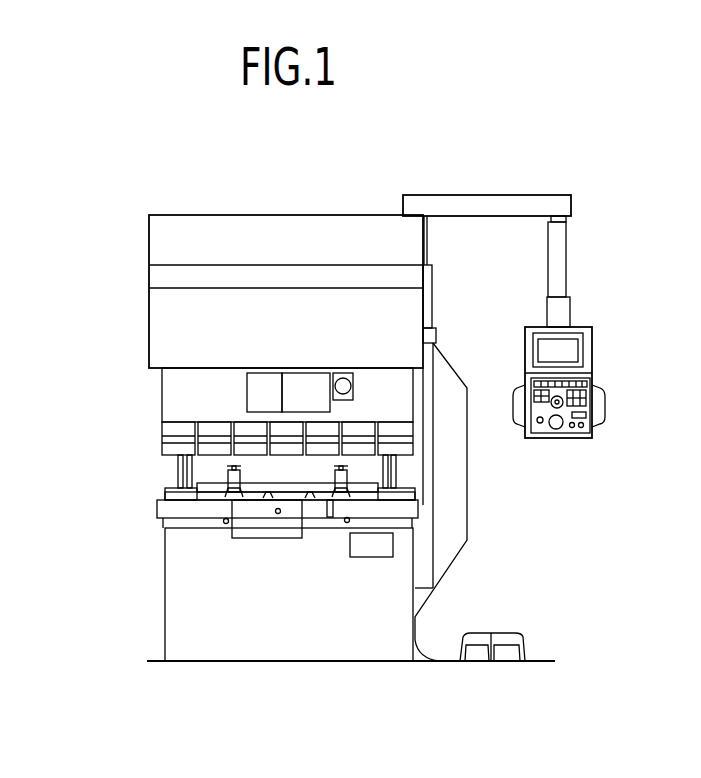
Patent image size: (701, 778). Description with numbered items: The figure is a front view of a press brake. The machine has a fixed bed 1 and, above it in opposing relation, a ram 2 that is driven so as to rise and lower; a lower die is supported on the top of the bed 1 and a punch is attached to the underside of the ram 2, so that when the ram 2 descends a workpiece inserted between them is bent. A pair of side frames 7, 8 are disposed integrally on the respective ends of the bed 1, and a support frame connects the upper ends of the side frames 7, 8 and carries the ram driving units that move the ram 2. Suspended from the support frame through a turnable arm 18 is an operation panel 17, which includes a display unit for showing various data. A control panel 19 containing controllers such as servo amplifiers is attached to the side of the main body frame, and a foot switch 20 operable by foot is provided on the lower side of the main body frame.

The bed 1 is at (173, 585).
The ram 2 is at (172, 403).
The side frame 7 is at (177, 478).
The side frame 8 is at (390, 473).
The operation panel 17 is at (589, 365).
The turnable arm 18 is at (495, 200).
The control panel 19 is at (453, 530).
The foot switch 20 is at (515, 632).